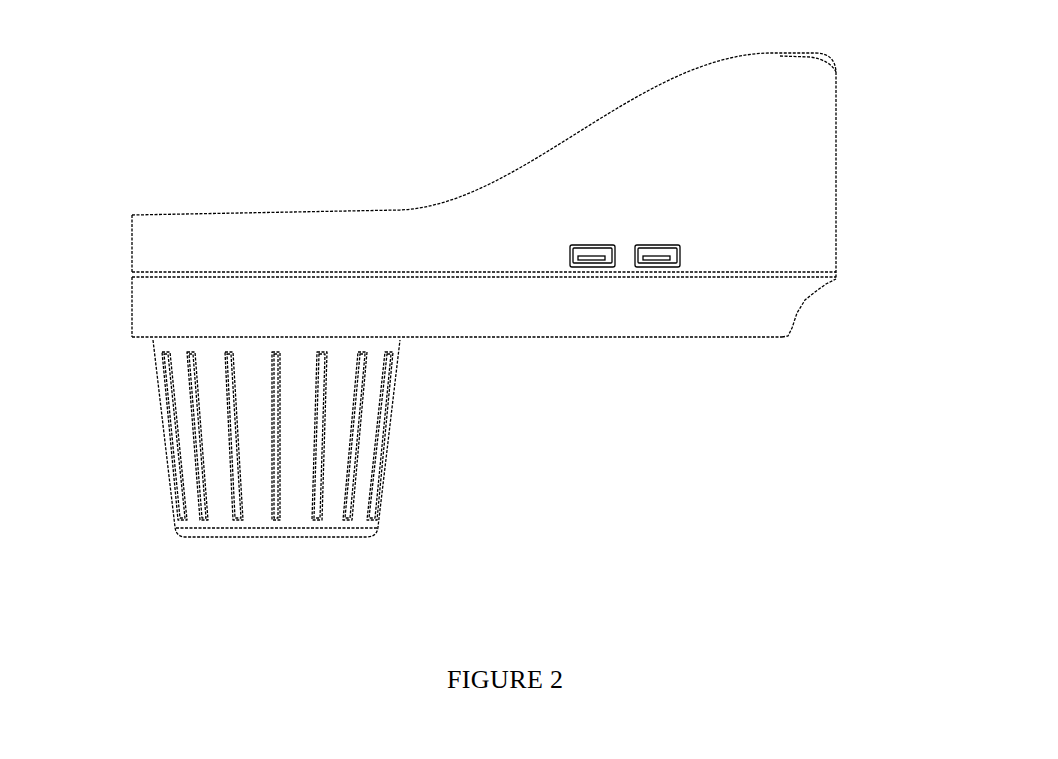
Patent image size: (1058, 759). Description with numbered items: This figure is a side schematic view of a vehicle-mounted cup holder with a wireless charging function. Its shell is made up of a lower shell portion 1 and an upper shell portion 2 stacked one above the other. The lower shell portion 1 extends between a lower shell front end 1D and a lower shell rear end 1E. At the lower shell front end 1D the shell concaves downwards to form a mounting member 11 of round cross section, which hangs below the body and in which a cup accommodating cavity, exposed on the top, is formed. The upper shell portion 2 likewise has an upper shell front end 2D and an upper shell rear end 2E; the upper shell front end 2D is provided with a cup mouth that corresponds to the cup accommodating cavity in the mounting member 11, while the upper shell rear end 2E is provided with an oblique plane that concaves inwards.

The lower shell portion 1 is at (537, 310).
The lower shell front end 1D is at (140, 312).
The lower shell rear end 1E is at (798, 310).
The upper shell portion 2 is at (803, 208).
The upper shell front end 2D is at (138, 231).
The upper shell rear end 2E is at (820, 240).
The mounting member 11 is at (295, 465).